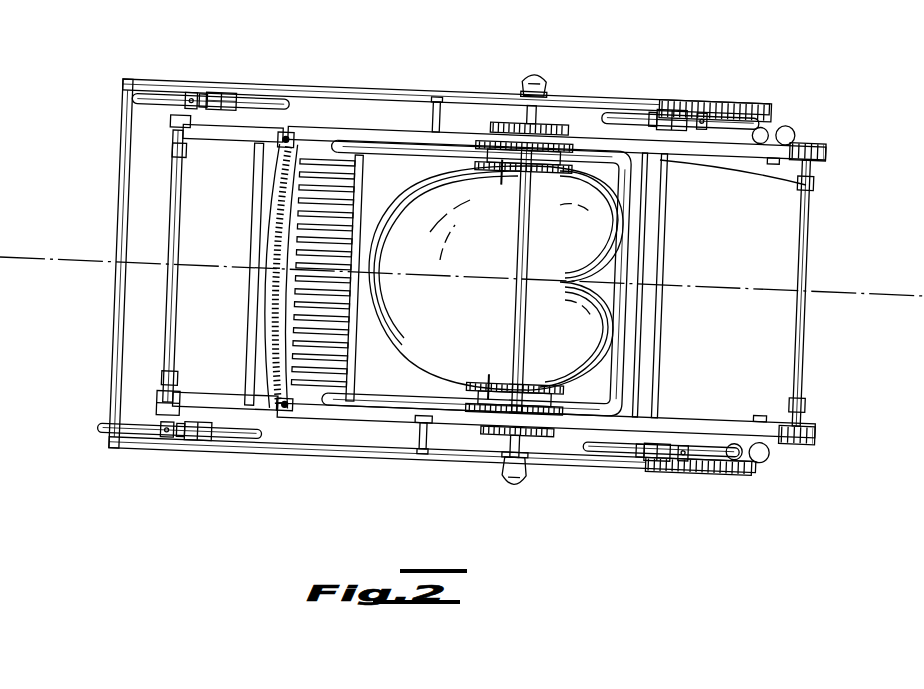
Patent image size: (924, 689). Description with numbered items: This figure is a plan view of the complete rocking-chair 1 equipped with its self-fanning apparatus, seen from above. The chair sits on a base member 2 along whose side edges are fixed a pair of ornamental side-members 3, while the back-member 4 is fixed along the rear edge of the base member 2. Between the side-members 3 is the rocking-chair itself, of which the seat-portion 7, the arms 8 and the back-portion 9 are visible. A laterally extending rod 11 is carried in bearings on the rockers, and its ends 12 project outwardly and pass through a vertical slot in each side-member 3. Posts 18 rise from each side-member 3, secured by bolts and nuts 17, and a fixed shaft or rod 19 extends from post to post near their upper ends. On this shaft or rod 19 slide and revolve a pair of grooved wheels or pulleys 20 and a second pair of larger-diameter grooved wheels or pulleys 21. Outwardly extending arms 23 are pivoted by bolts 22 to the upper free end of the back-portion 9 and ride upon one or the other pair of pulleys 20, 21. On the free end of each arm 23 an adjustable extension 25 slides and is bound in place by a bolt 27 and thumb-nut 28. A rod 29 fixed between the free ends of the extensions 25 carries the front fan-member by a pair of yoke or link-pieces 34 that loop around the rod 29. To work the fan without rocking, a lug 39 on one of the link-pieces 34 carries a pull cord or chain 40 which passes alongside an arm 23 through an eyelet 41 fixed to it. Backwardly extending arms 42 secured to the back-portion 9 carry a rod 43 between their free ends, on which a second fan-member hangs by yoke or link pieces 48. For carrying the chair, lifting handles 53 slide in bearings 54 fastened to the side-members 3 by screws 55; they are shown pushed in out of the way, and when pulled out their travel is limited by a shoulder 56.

The rocking-chair 1 is at (462, 216).
The base member 2 is at (322, 90).
The side-members 3 is at (125, 82).
The back-member 4 is at (118, 316).
The seat-portion 7 is at (703, 293).
The arms 8 is at (378, 142).
The back-portion 9 is at (280, 300).
The rod 11 is at (427, 431).
The ends of rod 12 is at (438, 88).
The bolts and nuts 17 is at (540, 75).
The posts 18 is at (550, 98).
The fixed shaft or rod 19 is at (535, 338).
The grooved wheels or pulleys 20 is at (500, 125).
The grooved wheels or pulleys of larger diameter 21 is at (504, 162).
The bolts 22 is at (312, 127).
The outwardly extending arms 23 is at (417, 124).
The adjustable extension 25 is at (828, 153).
The bolt 27 is at (772, 160).
The thumb-nut 28 is at (792, 126).
The rod 29 is at (806, 302).
The yoke or link-pieces 34 is at (818, 186).
The lug 39 is at (812, 200).
The pull cord or chain 40 is at (477, 150).
The eyelet 41 is at (404, 142).
The backwardly extending arms 42 is at (243, 134).
The rod 43 is at (170, 263).
The yoke or link pieces 48 is at (174, 155).
The lifting handles 53 is at (158, 93).
The bearings 54 is at (240, 95).
The screws 55 is at (232, 98).
The shoulder 56 is at (192, 93).